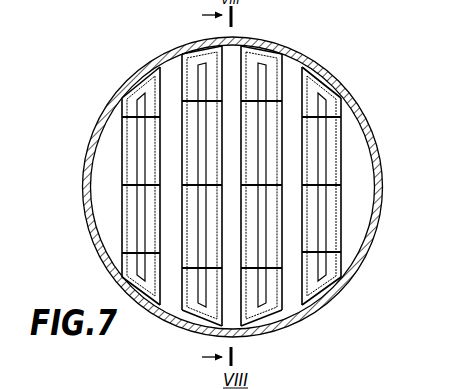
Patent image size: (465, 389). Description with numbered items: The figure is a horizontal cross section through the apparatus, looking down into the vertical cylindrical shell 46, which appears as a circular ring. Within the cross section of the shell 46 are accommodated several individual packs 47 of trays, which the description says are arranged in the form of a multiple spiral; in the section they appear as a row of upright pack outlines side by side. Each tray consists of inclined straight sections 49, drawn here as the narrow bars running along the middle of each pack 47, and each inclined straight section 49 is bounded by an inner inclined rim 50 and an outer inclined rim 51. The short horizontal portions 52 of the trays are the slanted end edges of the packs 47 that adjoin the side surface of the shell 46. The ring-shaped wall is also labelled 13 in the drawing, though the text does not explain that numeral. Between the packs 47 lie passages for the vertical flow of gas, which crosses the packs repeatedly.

The duct 13 is at (356, 244).
The vertical cylindrical shell 46 is at (357, 100).
The pack 47 is at (120, 135).
The inclined straight section 49 is at (272, 122).
The inner inclined rim 50 is at (325, 223).
The outer inclined rim 51 is at (340, 147).
The short horizontal portion 52 is at (315, 87).